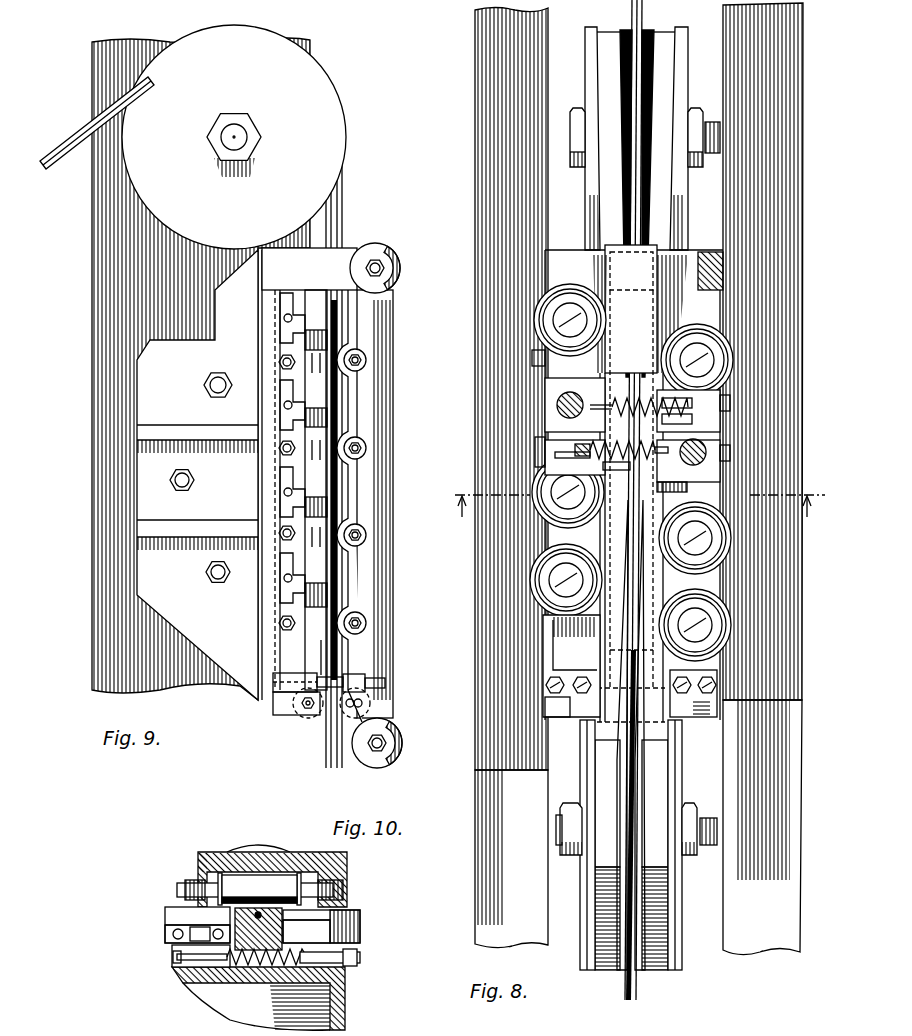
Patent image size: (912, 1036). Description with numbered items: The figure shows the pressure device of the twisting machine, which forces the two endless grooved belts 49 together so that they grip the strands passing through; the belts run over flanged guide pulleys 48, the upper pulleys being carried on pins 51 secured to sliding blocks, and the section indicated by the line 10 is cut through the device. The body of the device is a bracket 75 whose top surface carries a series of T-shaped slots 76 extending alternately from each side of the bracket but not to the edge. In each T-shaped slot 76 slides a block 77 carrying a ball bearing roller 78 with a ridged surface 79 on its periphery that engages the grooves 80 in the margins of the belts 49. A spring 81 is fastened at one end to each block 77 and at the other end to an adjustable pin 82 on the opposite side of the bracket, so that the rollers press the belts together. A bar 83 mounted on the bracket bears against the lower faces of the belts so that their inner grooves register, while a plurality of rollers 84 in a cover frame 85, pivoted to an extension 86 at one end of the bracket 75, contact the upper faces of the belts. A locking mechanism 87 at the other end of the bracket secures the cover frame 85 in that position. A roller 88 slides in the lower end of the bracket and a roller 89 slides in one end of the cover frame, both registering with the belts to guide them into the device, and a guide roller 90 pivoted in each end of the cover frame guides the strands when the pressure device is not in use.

In FIG. 9, the guide pulley 48 is at (346, 133).
In FIG. 8, the guide pulley 48 is at (634, 498).
In FIG. 9, the endless grooved belt 49 is at (73, 157).
In FIG. 8, the endless grooved belt 49 is at (598, 790).
In FIG. 10, the endless grooved belt 49 is at (272, 900).
In FIG. 9, the pin 51 is at (244, 136).
In FIG. 8, the pin 51 is at (717, 158).
In FIG. 9, the bracket 75 is at (259, 705).
In FIG. 8, the bracket 75 is at (555, 258).
In FIG. 10, the bracket 75 is at (196, 981).
In FIG. 9, the T-shaped slot 76 is at (278, 325).
In FIG. 8, the T-shaped slot 76 is at (548, 405).
In FIG. 8, the block 77 is at (563, 412).
In FIG. 10, the block 77 is at (178, 964).
In FIG. 9, the ball bearing roller 78 is at (306, 340).
In FIG. 8, the ball bearing roller 78 is at (567, 298).
In FIG. 10, the ball bearing roller 78 is at (168, 935).
In FIG. 9, the ridged surface 79 is at (331, 323).
In FIG. 8, the ridged surface 79 is at (532, 322).
In FIG. 10, the ridged surface 79 is at (163, 916).
In FIG. 9, the groove 80 is at (337, 203).
In FIG. 8, the spring 81 is at (606, 446).
In FIG. 10, the spring 81 is at (255, 962).
In FIG. 9, the adjustable pin 82 is at (280, 363).
In FIG. 8, the adjustable pin 82 is at (697, 411).
In FIG. 10, the adjustable pin 82 is at (347, 965).
In FIG. 9, the bar 83 is at (320, 651).
In FIG. 8, the bar 83 is at (610, 634).
In FIG. 10, the bar 83 is at (268, 936).
In FIG. 9, the roller 84 is at (352, 378).
In FIG. 10, the roller 84 is at (247, 880).
In FIG. 9, the cover frame 85 is at (389, 356).
In FIG. 10, the cover frame 85 is at (199, 863).
In FIG. 9, the extension 86 is at (347, 252).
In FIG. 8, the extension 86 is at (715, 264).
In FIG. 9, the locking mechanism 87 is at (378, 682).
In FIG. 8, the locking mechanism 87 is at (549, 690).
In FIG. 9, the roller 88 is at (307, 715).
In FIG. 9, the roller 89 is at (372, 710).
In FIG. 9, the guide roller 90 is at (396, 258).
In FIG. 10, the guide roller 90 is at (281, 851).
In FIG. 8, the section line 10 is at (637, 521).